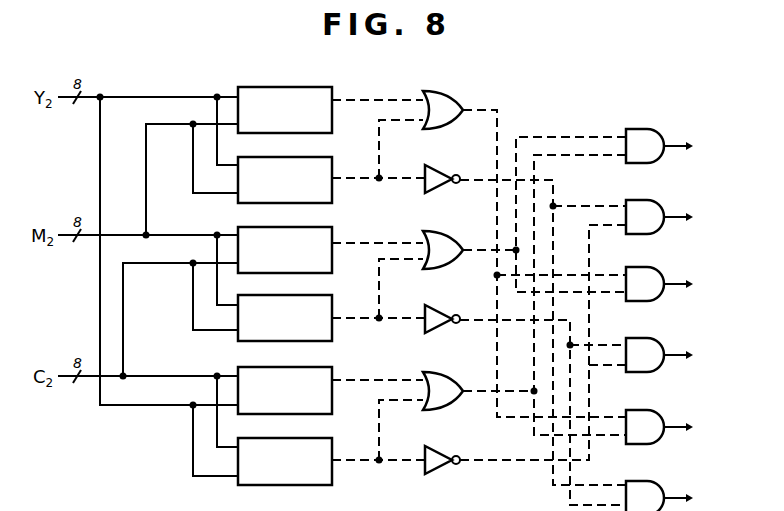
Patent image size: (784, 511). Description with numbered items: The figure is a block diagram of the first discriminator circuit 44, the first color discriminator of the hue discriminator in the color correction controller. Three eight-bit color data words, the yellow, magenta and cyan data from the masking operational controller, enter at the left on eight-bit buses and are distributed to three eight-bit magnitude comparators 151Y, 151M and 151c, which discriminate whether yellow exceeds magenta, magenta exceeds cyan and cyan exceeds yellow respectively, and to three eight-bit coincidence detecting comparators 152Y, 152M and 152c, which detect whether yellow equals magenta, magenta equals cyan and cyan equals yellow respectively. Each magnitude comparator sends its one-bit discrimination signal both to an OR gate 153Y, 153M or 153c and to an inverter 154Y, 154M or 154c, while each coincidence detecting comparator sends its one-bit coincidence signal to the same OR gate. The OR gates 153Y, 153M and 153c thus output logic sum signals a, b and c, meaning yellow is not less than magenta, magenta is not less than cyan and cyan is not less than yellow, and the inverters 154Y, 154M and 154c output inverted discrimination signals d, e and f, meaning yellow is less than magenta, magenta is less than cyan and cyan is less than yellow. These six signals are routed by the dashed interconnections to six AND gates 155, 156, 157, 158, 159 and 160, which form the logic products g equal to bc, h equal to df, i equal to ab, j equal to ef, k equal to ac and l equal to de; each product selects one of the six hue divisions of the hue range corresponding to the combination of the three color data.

The first discriminator circuit 44 is at (520, 99).
The magnitude comparator 151Y is at (315, 157).
The magnitude comparator 151M is at (315, 295).
The magnitude comparator 151c is at (315, 438).
The coincidence detecting comparator 152Y is at (325, 87).
The coincidence detecting comparator 152M is at (325, 227).
The coincidence detecting comparator 152c is at (325, 367).
The OR gate 153Y is at (441, 91).
The OR gate 153M is at (441, 231).
The OR gate 153c is at (441, 372).
The inverter 154Y is at (441, 165).
The inverter 154M is at (441, 305).
The inverter 154c is at (441, 446).
The AND gate 155 is at (638, 129).
The AND gate 156 is at (643, 186).
The AND gate 157 is at (643, 253).
The AND gate 158 is at (643, 324).
The AND gate 159 is at (643, 396).
The AND gate 160 is at (645, 467).